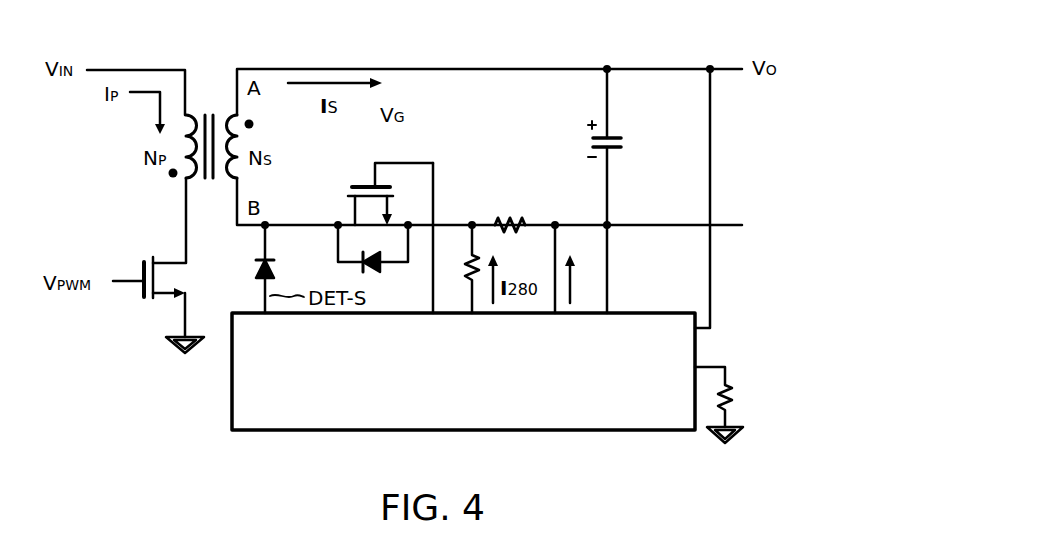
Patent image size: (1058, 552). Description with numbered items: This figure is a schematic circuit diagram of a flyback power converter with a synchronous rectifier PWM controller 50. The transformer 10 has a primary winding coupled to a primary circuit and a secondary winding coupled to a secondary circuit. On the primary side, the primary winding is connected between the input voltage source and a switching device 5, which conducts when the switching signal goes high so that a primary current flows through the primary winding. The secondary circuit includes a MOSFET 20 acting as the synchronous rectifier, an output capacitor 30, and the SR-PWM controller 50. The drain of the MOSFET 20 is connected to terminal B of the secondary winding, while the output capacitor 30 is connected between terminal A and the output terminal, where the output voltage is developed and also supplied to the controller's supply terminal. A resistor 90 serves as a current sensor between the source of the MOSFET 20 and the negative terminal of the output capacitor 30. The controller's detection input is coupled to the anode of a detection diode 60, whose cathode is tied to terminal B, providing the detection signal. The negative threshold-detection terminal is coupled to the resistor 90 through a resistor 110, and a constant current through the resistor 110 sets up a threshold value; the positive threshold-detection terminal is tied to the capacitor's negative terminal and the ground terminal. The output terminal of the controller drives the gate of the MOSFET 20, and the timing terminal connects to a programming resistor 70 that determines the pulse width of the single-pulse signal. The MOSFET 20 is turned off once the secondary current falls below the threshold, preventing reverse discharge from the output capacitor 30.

The transformer 10 is at (212, 110).
The switching device 5 is at (147, 257).
The detection diode 60 is at (255, 268).
The MOSFET 20 is at (350, 187).
The resistor 110 is at (467, 255).
The resistor 90 is at (512, 218).
The output capacitor 30 is at (624, 143).
The SR-PWM controller 50 is at (232, 400).
The programming resistor 70 is at (742, 401).